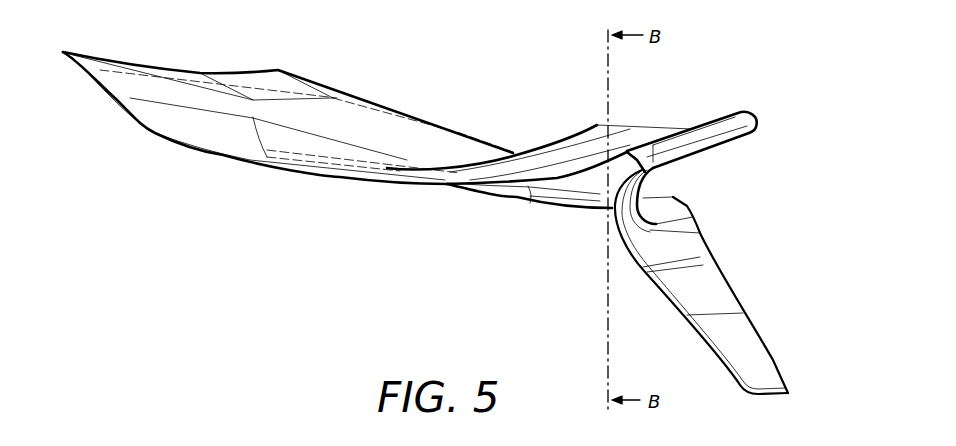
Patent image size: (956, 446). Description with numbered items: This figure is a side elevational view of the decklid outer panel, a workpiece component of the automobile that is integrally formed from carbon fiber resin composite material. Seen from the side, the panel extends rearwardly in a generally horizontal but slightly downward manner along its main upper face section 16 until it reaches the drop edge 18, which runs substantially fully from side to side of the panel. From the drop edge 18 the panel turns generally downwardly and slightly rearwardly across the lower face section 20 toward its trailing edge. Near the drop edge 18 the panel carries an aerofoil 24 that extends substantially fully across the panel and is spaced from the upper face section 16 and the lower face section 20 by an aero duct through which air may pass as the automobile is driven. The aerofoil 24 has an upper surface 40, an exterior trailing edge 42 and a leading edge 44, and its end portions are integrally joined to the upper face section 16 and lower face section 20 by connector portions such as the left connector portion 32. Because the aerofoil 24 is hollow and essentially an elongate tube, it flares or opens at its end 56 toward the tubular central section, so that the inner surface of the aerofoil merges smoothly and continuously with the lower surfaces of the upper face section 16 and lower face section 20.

The main upper face section 16 is at (373, 108).
The drop edge 18 is at (680, 195).
The lower face section 20 is at (753, 335).
The aerofoil 24 is at (643, 133).
The left connector portion 32 is at (653, 193).
The upper surface 40 is at (553, 153).
The exterior trailing edge 42 is at (753, 117).
The leading edge 44 is at (578, 130).
The end 56 is at (590, 173).